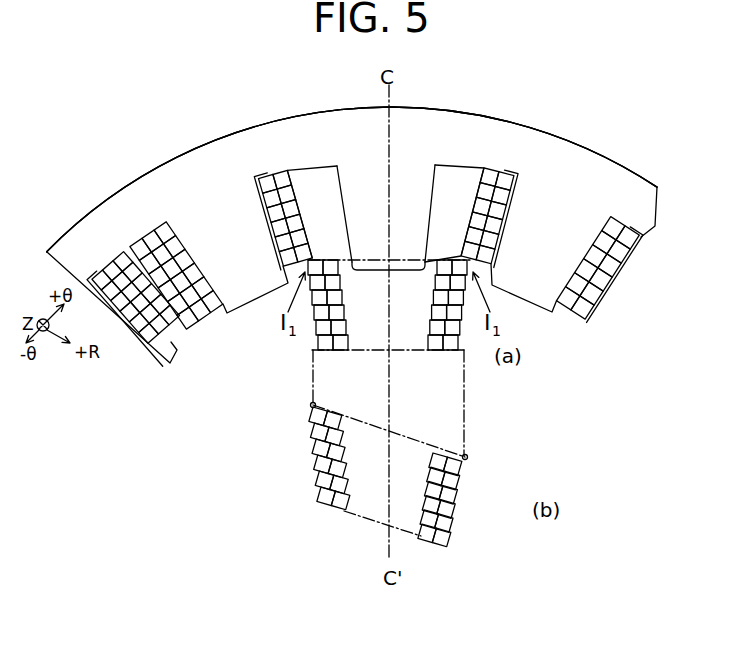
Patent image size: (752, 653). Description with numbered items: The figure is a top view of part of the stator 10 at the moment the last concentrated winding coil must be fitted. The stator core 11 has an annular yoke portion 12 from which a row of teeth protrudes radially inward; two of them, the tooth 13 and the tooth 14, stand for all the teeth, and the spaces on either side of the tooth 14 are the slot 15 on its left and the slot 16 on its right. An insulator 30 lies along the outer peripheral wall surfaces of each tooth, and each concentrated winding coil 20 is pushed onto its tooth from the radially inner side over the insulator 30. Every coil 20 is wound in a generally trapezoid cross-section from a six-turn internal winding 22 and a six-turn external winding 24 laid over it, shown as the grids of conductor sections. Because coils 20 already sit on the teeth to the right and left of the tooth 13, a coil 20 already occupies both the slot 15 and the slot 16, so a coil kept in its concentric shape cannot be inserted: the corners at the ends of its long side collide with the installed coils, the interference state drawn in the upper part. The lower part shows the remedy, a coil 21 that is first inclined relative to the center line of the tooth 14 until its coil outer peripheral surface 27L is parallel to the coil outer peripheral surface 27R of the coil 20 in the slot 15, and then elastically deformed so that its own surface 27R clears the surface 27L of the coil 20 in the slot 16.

The stator 10 is at (714, 191).
The stator core 11 is at (617, 162).
The yoke portion 12 is at (428, 130).
The tooth 13 is at (243, 298).
The tooth 14 is at (412, 262).
The slot 15 is at (337, 230).
The slot 16 is at (456, 242).
The concentrated winding coil 20 is at (212, 302).
The coil 21 is at (472, 587).
The internal winding 22 is at (433, 345).
The external winding 24 is at (448, 346).
The coil outer peripheral surface 27L is at (423, 237).
The coil outer peripheral surface 27R is at (497, 468).
The insulator 30 is at (331, 204).